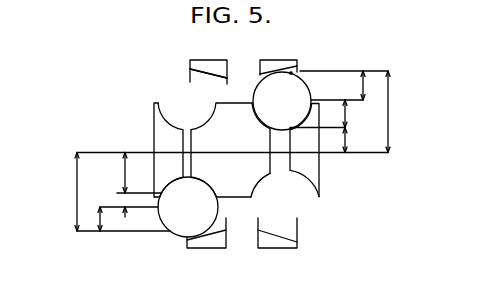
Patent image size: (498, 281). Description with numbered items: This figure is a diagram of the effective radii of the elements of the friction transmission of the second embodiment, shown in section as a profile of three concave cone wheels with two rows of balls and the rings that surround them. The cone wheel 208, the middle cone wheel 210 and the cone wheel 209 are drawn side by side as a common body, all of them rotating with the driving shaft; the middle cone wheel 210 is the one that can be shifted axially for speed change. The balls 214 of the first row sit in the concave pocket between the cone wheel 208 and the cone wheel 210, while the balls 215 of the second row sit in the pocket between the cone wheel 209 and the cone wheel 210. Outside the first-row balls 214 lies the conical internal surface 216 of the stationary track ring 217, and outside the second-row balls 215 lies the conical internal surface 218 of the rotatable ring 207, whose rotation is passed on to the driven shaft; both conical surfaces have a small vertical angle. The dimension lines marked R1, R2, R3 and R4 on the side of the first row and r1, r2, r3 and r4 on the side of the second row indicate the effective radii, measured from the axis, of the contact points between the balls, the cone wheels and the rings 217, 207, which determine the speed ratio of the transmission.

The rotatable ring 207 is at (273, 61).
The concave cone wheel 208 is at (179, 150).
The concave cone wheel 209 is at (318, 150).
The middle cone wheel 210 is at (240, 150).
The balls of a first row 214 is at (197, 224).
The balls of a second row 215 is at (292, 122).
The conical internal surface 216 is at (198, 71).
The track ring 217 is at (206, 61).
The conical internal surface 218 is at (291, 73).
The radius dimension R1 is at (136, 173).
The radius dimension R2 is at (116, 192).
The radius dimension R3 is at (127, 203).
The radius dimension R4 is at (91, 220).
The radius dimension r1 is at (351, 140).
The radius dimension r2 is at (381, 112).
The radius dimension r3 is at (352, 114).
The radius dimension r4 is at (352, 85).